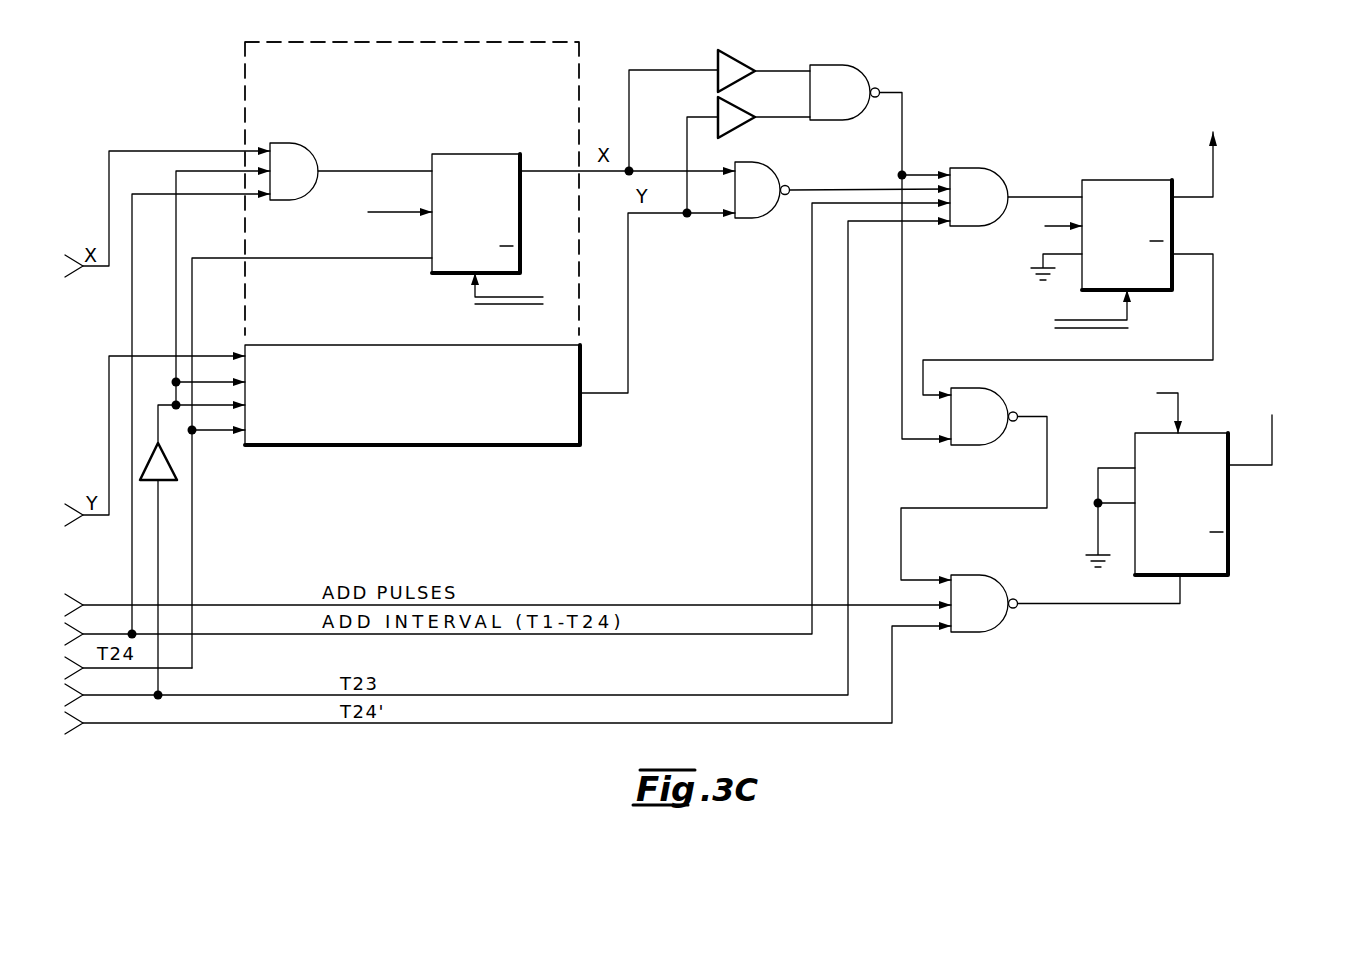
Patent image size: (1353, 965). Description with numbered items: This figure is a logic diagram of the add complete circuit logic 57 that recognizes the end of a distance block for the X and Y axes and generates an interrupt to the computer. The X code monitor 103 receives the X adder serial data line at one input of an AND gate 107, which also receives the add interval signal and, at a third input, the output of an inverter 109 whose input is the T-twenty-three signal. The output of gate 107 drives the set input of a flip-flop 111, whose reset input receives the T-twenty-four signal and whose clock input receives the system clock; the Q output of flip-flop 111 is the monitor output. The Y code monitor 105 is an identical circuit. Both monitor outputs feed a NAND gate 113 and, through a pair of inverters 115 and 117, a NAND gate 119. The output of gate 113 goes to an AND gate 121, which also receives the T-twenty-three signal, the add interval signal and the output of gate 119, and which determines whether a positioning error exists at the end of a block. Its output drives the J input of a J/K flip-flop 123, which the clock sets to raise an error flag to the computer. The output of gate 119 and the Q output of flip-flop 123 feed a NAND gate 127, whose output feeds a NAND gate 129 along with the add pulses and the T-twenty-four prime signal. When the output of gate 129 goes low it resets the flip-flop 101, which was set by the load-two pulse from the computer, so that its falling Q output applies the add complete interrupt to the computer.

The X and Y add complete logic 57 is at (614, 64).
The flip-flop 101 is at (1135, 437).
The X code monitor 103 is at (412, 188).
The Y code monitor 105 is at (412, 395).
The AND gate 107 is at (302, 202).
The inverter 109 is at (178, 474).
The flip-flop 111 is at (448, 275).
The NAND gate 113 is at (760, 219).
The inverter 115 is at (738, 58).
The inverter 117 is at (745, 128).
The NAND gate 119 is at (858, 67).
The AND gate 121 is at (989, 171).
The J/K flip-flop 123 is at (1085, 180).
The NAND gate 127 is at (984, 446).
The NAND gate 129 is at (966, 633).